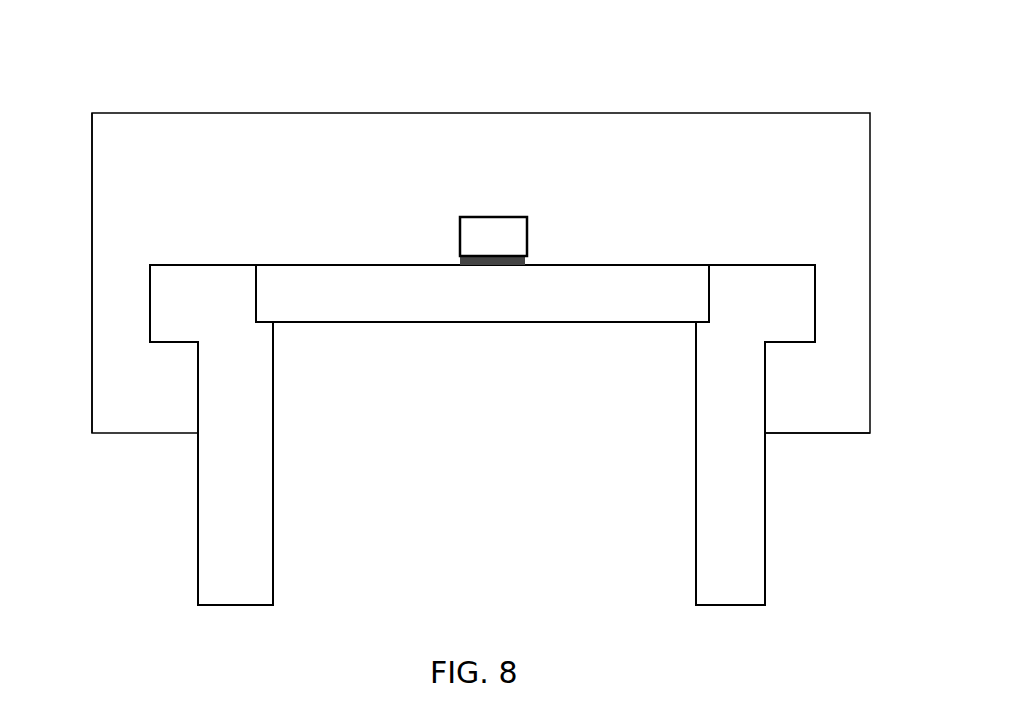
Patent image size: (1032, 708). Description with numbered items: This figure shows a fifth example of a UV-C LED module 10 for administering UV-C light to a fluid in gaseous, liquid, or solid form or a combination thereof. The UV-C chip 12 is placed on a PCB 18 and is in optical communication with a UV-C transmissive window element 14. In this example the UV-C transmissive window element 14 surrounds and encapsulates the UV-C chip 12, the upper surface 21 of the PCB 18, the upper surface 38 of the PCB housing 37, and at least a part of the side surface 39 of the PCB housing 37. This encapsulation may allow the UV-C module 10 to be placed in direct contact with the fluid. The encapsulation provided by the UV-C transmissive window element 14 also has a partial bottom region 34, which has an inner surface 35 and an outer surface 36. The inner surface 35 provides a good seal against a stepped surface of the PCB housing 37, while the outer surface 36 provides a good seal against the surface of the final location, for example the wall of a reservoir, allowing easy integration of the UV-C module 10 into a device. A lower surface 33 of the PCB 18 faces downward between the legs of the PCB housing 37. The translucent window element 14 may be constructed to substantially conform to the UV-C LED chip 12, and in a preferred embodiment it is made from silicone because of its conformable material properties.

The UV-C module 10 is at (483, 302).
The UV-C chip 12 is at (482, 235).
The UV-C transmissive window element 14 is at (483, 286).
The PCB 18 is at (482, 354).
The upper surface of the PCB 21 is at (445, 321).
The bottom surface of carrier 33 is at (626, 323).
The partial bottom region 34 is at (137, 380).
The inner surface 35 is at (795, 347).
The outer surface 36 is at (808, 435).
The PCB housing 37 is at (267, 513).
The upper surface of the PCB housing 38 is at (199, 265).
The side surface of the PCB housing 39 is at (197, 495).